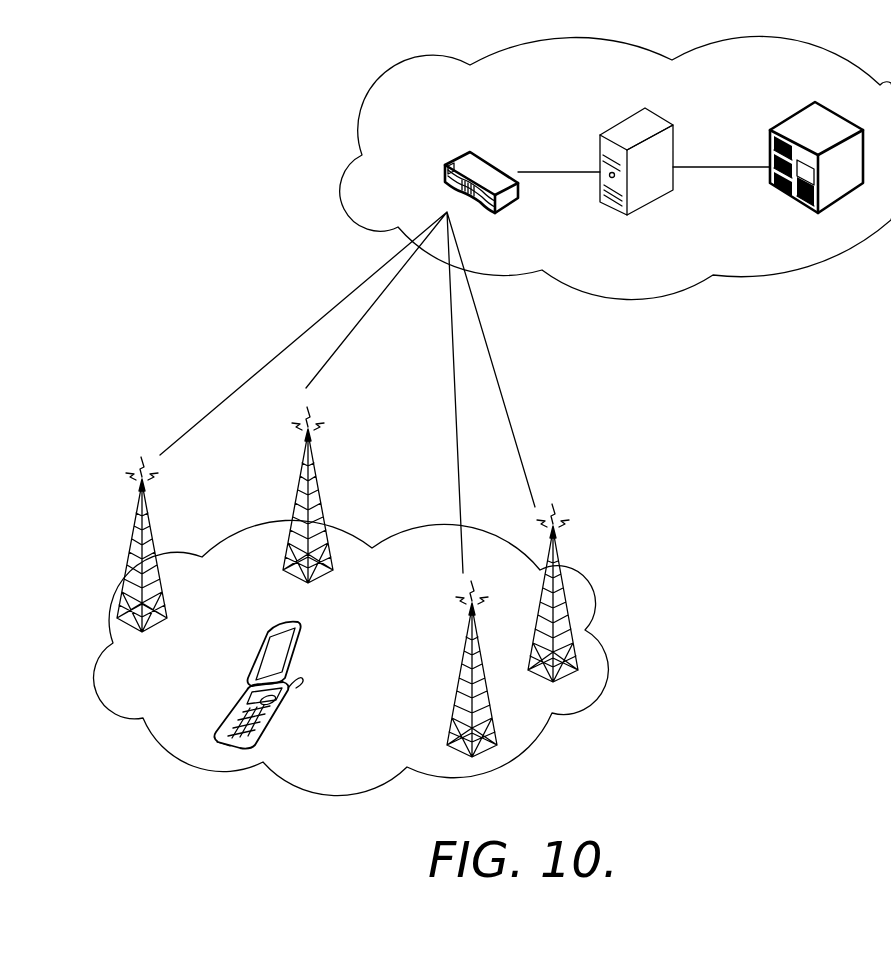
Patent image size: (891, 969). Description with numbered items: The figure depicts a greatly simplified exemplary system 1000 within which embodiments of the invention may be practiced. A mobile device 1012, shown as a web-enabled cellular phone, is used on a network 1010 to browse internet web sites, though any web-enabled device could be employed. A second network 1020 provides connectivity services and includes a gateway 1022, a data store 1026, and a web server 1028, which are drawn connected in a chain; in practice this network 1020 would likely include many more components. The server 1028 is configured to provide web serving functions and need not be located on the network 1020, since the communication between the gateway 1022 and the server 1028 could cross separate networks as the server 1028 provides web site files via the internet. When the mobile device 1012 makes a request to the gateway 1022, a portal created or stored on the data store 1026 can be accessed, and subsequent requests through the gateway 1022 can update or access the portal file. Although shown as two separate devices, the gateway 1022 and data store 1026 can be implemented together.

The system 1000 is at (86, 109).
The network 1010 is at (333, 793).
The mobile device 1012 is at (279, 622).
The network 1020 is at (387, 82).
The gateway 1022 is at (456, 157).
The data store 1026 is at (613, 126).
The web server 1028 is at (789, 119).